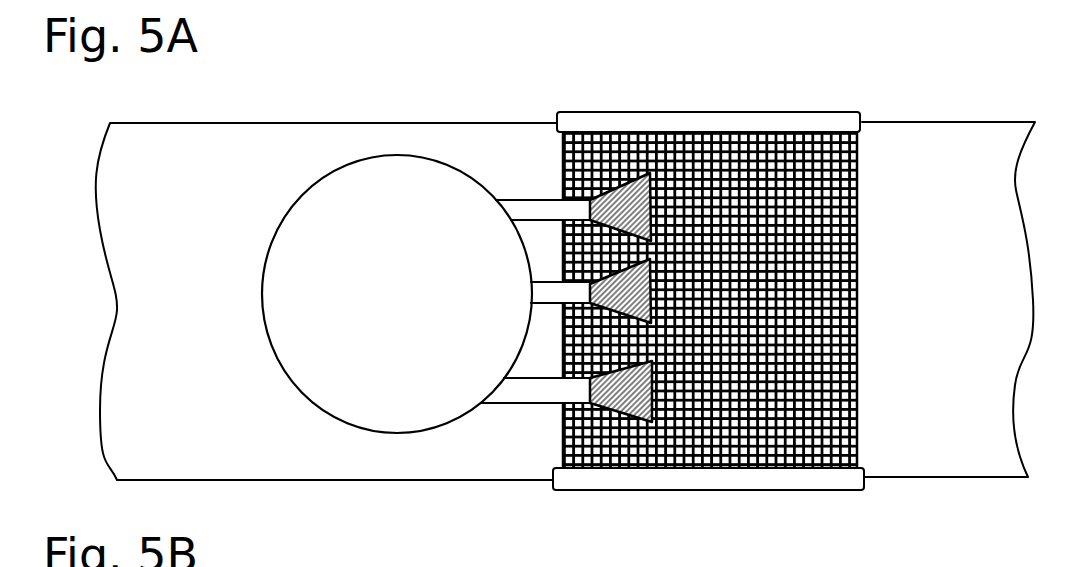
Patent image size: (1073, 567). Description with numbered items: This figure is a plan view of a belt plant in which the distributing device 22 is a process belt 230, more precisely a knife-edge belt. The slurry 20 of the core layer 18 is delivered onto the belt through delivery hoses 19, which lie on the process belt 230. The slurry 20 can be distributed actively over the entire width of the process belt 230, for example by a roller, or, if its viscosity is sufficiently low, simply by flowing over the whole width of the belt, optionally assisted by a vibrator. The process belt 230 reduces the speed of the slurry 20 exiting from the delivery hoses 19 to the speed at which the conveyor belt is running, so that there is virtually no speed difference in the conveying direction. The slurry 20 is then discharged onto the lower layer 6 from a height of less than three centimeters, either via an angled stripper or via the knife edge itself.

In FIG. 5A, the lower layer 6 is at (336, 138).
In FIG. 5A, the core layer 18 is at (313, 219).
In FIG. 5B, the core layer 18 is at (510, 566).
In FIG. 5A, the delivery hoses 19 is at (532, 207).
In FIG. 5A, the slurry 20 is at (620, 193).
In FIG. 5A, the distributing device 22 is at (880, 496).
In FIG. 5A, the process belt 230 is at (717, 150).